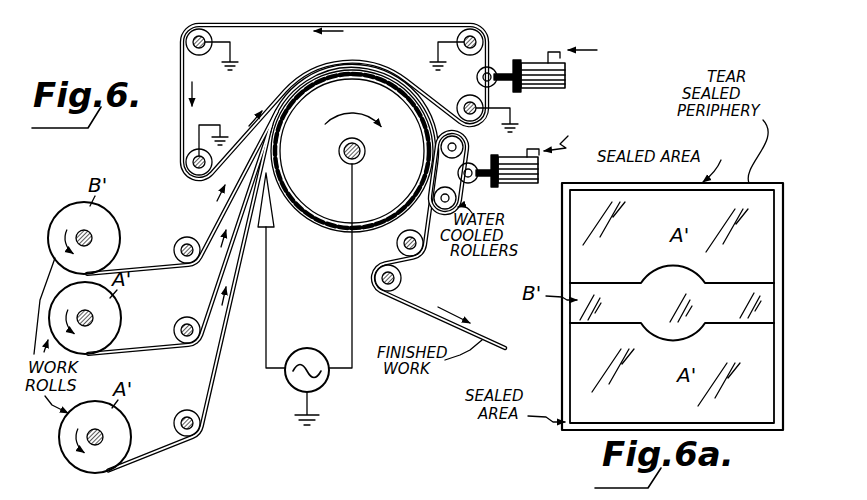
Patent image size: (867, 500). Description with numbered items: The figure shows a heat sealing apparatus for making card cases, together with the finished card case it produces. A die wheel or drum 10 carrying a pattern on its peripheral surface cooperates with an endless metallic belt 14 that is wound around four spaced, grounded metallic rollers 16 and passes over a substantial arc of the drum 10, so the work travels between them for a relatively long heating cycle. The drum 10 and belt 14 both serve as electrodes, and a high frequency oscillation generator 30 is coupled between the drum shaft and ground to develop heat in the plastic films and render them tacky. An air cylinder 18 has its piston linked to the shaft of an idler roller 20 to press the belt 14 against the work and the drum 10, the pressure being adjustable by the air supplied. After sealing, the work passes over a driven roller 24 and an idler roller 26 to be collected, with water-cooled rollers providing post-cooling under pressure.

The drum 10 is at (401, 181).
The endless metallic belt 14 is at (442, 20).
The metallic rollers 16 is at (188, 30).
The air cylinder 18 is at (541, 54).
The idler roller 20 is at (493, 69).
The driven roller 24 is at (396, 247).
The idler roller 26 is at (380, 292).
The high frequency oscillation generator 30 is at (315, 349).